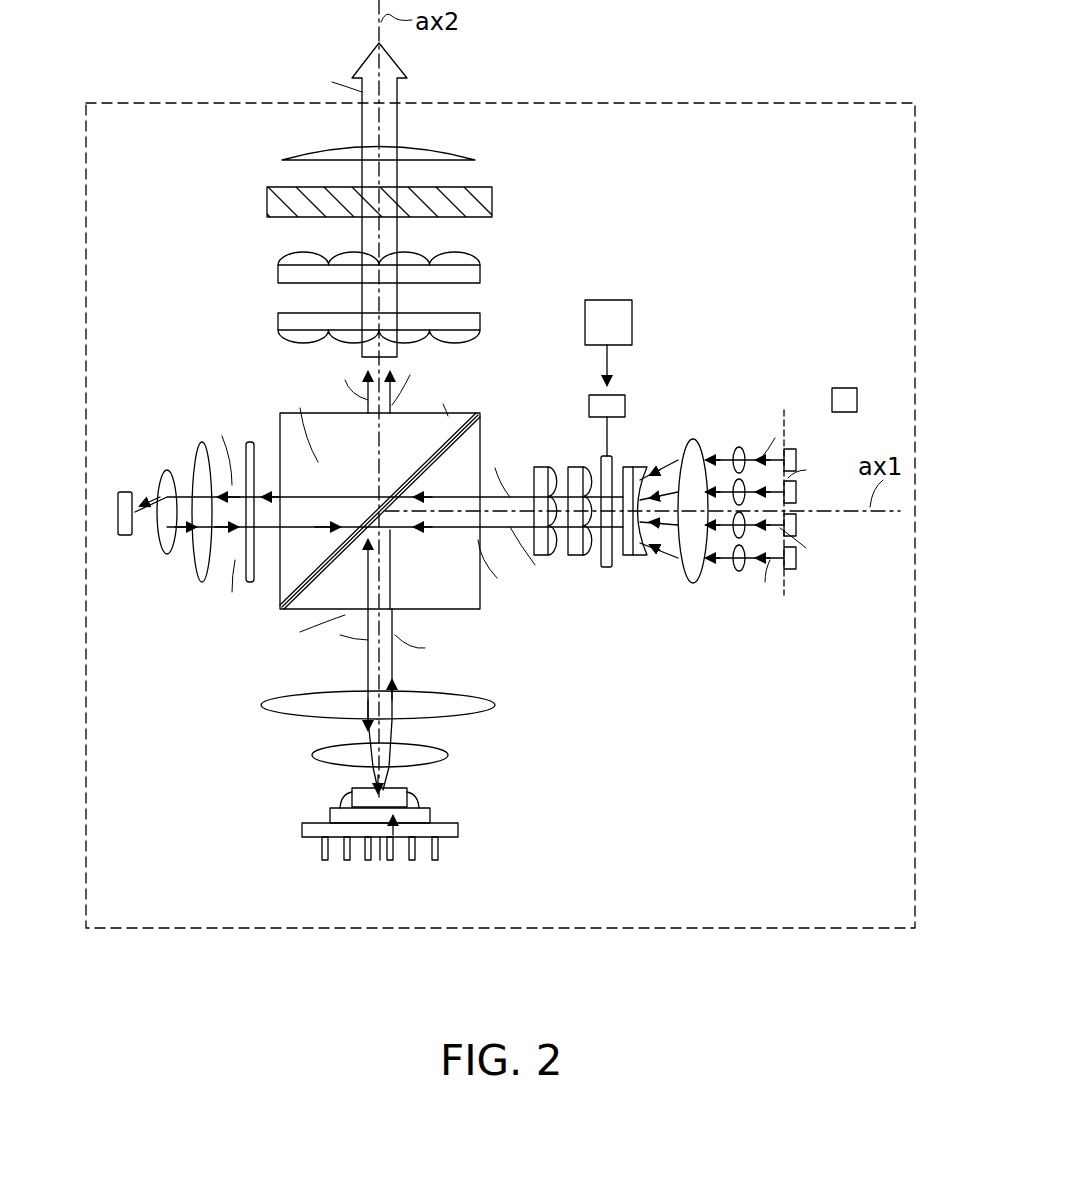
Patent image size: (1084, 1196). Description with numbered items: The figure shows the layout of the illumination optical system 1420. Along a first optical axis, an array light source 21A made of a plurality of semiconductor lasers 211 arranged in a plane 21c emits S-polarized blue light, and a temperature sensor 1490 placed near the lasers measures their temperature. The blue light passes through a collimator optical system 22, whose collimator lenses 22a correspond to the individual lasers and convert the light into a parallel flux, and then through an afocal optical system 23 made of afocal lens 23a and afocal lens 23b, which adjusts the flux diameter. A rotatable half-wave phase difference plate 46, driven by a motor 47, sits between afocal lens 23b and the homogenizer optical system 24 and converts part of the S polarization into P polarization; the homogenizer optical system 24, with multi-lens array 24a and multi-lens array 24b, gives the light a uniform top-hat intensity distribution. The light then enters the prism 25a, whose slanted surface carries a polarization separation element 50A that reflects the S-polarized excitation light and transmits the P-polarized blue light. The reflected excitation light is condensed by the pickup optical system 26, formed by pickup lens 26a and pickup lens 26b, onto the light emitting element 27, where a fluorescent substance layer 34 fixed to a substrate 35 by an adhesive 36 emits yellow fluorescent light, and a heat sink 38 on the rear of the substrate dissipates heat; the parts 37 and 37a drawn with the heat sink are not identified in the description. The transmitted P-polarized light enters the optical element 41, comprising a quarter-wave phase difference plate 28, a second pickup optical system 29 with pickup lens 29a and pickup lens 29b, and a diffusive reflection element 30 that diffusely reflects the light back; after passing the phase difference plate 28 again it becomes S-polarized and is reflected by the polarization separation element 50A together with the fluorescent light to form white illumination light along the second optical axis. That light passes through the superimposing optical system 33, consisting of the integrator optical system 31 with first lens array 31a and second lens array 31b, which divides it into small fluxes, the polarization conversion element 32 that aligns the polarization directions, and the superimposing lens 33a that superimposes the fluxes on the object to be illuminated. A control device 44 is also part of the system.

The illumination optical system 1420 is at (757, 103).
The temperature sensor 1490 is at (845, 388).
The superimposing optical system 33 is at (238, 225).
The superimposing lens 33a is at (455, 153).
The polarization conversion element 32 is at (492, 190).
The integrator optical system 31 is at (197, 262).
The first lens array 31a is at (278, 322).
The second lens array 31b is at (278, 276).
The control device 44 is at (632, 310).
The motor 47 is at (600, 395).
The phase difference plate 46 is at (606, 567).
The afocal optical system 23 is at (725, 390).
The afocal lens 23a is at (690, 440).
The afocal lens 23b is at (630, 465).
The collimator optical system 22 is at (748, 440).
The collimator lens 22a is at (735, 454).
The array light source 21A is at (792, 440).
The semiconductor laser 211 is at (797, 450).
The plane 21c is at (790, 596).
The homogenizer optical system 24 is at (588, 407).
The multi-lens array 24a is at (575, 467).
The multi-lens array 24b is at (540, 467).
The prism 25a is at (480, 605).
The polarization separation element 50A is at (440, 440).
The optical element 41 is at (265, 617).
The phase difference plate 28 is at (250, 442).
The second pickup optical system 29 is at (200, 452).
The pickup lens 29a is at (200, 578).
The pickup lens 29b is at (162, 555).
The diffusive reflection element 30 is at (126, 490).
The pickup optical system 26 is at (566, 672).
The pickup lens 26a is at (490, 697).
The pickup lens 26b is at (447, 755).
The light emitting element 27 is at (472, 820).
The fluorescent substance layer 34 is at (352, 790).
The substrate 35 is at (330, 812).
The adhesive 36 is at (418, 800).
The heat sink 38 is at (302, 830).
The heat radiation fins 37 is at (400, 860).
The fin 37a is at (380, 860).